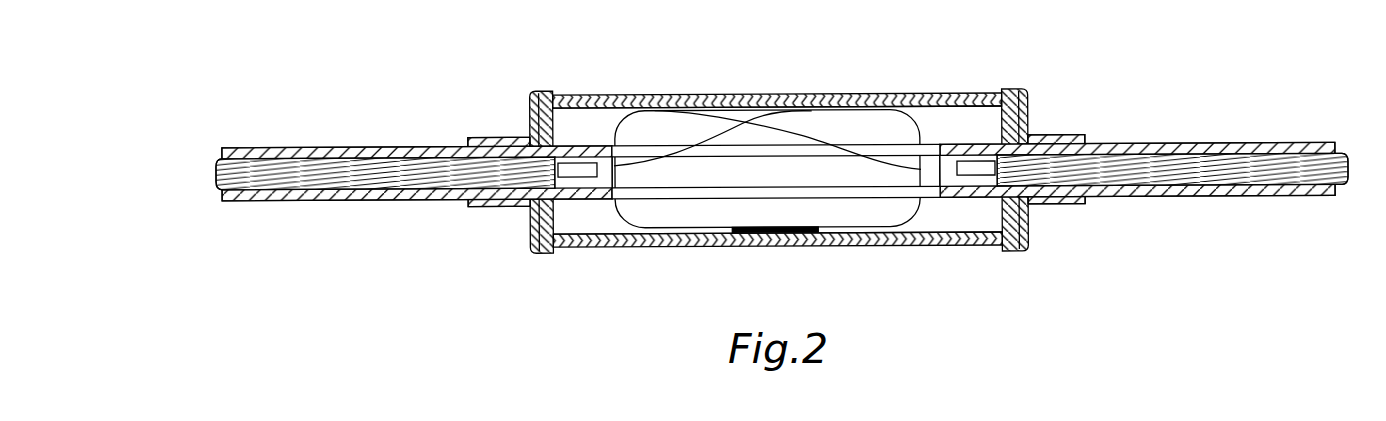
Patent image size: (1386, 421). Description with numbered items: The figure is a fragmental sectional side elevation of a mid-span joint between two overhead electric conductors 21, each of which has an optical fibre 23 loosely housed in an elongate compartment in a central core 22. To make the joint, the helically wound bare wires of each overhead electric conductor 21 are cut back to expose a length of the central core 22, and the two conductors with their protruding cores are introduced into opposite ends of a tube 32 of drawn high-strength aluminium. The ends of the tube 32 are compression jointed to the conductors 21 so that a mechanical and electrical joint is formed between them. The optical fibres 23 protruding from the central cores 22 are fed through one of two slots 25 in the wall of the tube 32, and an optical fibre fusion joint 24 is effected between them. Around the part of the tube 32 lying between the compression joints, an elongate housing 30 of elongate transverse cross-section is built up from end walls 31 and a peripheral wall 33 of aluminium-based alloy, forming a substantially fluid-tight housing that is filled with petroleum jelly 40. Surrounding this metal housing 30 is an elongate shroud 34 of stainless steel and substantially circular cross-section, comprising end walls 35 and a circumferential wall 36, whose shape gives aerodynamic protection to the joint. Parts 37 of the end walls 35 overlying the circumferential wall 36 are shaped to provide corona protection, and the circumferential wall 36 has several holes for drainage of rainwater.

The overhead electric conductor 21 is at (240, 166).
The central core 22 is at (580, 174).
The optical fibre 23 is at (723, 130).
The optical fibre fusion joint 24 is at (807, 228).
The slot 25 is at (757, 153).
The elongate housing 30 is at (692, 96).
The end wall 31 is at (1016, 114).
The tube 32 is at (1220, 148).
The peripheral wall 33 is at (947, 104).
The elongate shroud 34 is at (855, 248).
The end wall of shroud 35 is at (503, 138).
The circumferential wall 36 is at (850, 102).
The parts of the end walls 37 is at (538, 92).
The petroleum jelly 40 is at (616, 219).